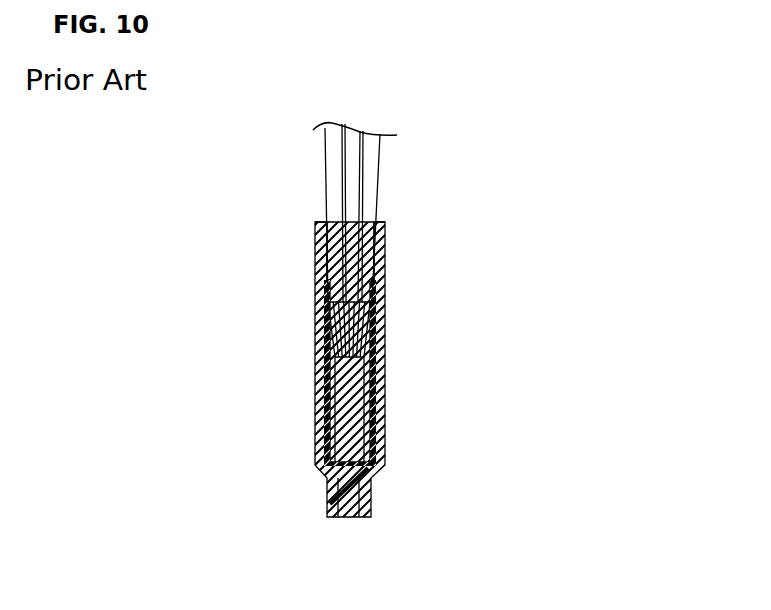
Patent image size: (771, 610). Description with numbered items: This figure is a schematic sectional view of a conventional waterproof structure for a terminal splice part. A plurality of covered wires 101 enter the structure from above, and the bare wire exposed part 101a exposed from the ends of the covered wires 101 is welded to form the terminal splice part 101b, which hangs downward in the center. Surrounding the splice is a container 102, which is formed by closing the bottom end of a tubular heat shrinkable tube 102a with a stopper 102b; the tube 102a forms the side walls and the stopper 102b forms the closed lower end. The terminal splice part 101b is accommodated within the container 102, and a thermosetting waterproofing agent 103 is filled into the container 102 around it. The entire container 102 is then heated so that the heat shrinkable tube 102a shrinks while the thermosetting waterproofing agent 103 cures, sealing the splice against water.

The covered wires 101 is at (327, 166).
The bare wire exposed part 101a is at (367, 327).
The terminal splice part 101b is at (352, 410).
The container 102 is at (402, 368).
The heat shrinkable tube 102a is at (385, 265).
The stopper 102b is at (350, 517).
The thermosetting waterproofing agent 103 is at (331, 394).